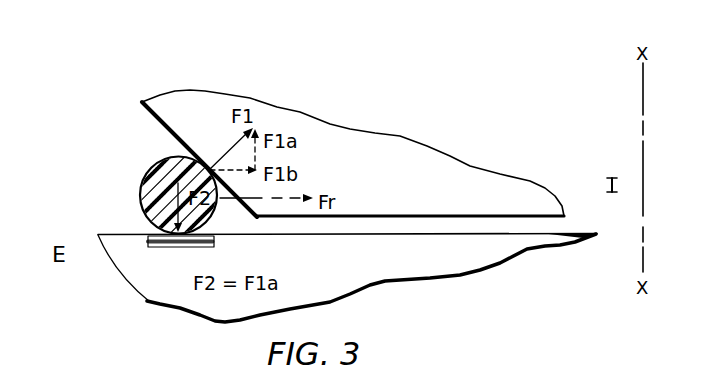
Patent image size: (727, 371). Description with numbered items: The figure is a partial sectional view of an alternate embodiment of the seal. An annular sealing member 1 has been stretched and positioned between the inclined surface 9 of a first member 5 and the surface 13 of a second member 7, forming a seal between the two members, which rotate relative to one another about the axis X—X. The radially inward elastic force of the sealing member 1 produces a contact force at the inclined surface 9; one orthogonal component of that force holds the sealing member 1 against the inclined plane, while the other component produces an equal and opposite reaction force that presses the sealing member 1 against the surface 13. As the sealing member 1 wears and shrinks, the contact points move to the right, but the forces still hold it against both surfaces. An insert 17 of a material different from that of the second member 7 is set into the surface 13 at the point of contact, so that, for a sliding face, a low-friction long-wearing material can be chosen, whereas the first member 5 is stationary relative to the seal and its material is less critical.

The annular sealing member 1 is at (157, 163).
The first member 5 is at (367, 148).
The second member 7 is at (407, 280).
The inclined surface 9 is at (173, 130).
The surface 13 is at (118, 234).
The insert 17 is at (150, 250).